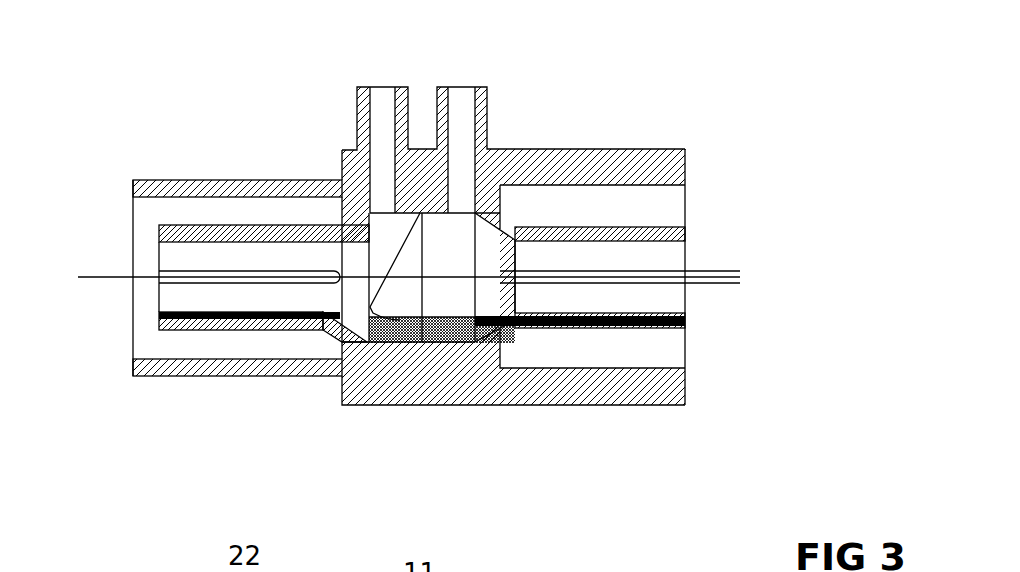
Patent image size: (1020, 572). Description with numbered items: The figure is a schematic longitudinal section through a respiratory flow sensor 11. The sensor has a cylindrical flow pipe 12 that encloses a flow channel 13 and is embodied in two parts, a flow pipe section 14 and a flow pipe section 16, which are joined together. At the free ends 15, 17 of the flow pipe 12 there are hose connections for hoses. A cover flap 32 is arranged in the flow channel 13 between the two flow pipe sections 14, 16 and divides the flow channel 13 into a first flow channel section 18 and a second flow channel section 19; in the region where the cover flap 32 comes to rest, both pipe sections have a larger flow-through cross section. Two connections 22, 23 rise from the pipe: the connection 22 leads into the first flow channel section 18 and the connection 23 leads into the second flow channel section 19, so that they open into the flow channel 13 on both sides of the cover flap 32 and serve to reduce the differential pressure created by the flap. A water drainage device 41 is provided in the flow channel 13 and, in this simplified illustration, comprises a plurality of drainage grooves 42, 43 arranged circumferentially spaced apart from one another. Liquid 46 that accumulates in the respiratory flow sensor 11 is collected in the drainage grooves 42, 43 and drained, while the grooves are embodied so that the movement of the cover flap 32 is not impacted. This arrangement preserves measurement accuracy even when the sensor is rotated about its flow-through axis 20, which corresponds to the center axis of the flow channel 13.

The respiratory flow sensor 11 is at (592, 128).
The flow pipe 12 is at (227, 172).
The flow channel 13 is at (470, 263).
The flow pipe section 14 is at (258, 372).
The free end 15 is at (127, 362).
The flow pipe section 16 is at (603, 405).
The free end 17 is at (687, 383).
The first flow channel section 18 is at (228, 270).
The second flow channel section 19 is at (660, 272).
The flow-through axis 20 is at (727, 277).
The connection 22 is at (358, 110).
The connection 23 is at (488, 112).
The cover flap 32 is at (386, 262).
The water drainage device 41 is at (385, 367).
The drainage groove 42 is at (173, 270).
The drainage groove 43 is at (203, 311).
The liquid 46 is at (452, 335).